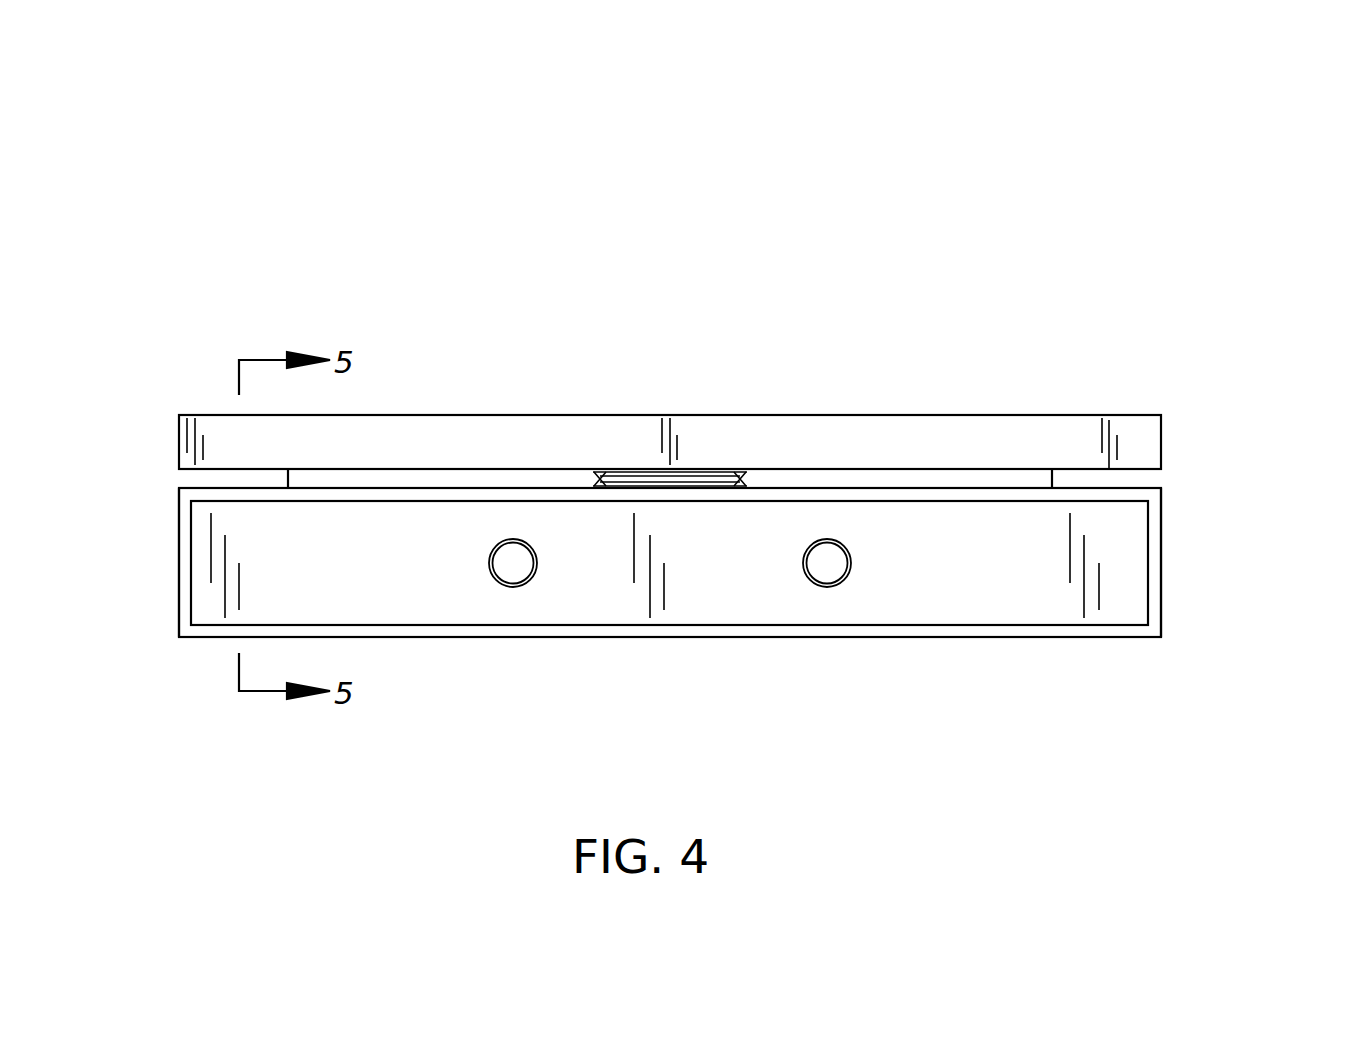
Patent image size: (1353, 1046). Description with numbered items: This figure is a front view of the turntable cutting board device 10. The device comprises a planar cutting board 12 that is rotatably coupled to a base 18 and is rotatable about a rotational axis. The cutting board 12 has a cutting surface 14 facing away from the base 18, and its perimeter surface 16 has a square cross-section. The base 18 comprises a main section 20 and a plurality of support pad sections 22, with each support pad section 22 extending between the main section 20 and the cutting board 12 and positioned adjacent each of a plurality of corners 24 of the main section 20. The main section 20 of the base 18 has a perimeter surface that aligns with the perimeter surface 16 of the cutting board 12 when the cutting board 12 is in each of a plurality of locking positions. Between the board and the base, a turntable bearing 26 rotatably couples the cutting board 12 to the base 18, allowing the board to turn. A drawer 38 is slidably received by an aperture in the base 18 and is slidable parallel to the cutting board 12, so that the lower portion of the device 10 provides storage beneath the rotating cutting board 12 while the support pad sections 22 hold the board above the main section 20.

The turntable cutting board device 10 is at (701, 400).
The planar cutting board 12 is at (1018, 434).
The cutting surface 14 is at (535, 415).
The perimeter surface 16 is at (809, 434).
The base 18 is at (1160, 536).
The main section 20 is at (1160, 608).
The support pad section 22 is at (203, 478).
The corner 24 is at (179, 563).
The turntable bearing 26 is at (695, 473).
The drawer 38 is at (980, 568).